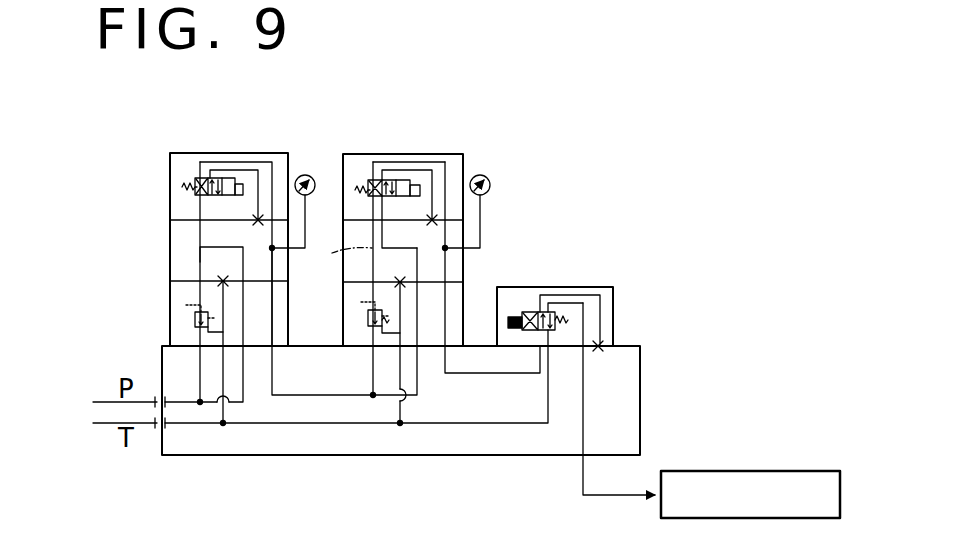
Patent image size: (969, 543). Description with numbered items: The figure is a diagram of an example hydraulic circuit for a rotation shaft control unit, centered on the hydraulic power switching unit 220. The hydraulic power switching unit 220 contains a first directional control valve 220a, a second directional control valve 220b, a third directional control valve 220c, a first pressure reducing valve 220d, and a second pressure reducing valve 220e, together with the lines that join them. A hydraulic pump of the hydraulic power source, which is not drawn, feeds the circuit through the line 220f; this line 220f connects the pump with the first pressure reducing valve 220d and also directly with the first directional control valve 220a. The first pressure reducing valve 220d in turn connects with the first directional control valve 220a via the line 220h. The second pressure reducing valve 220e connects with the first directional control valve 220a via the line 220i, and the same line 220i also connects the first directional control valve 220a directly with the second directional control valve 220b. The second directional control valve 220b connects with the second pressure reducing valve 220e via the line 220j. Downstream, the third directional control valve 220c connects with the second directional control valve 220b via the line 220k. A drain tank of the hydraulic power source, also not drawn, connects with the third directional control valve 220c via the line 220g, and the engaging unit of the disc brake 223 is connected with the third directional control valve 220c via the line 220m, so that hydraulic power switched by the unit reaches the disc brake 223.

The hydraulic power switching unit 220 is at (488, 72).
The first directional control valve 220a is at (222, 150).
The second directional control valve 220b is at (411, 150).
The third directional control valve 220c is at (531, 306).
The first pressure reducing valve 220d is at (190, 329).
The second pressure reducing valve 220e is at (364, 329).
The line 220f is at (222, 245).
The line 220g is at (408, 396).
The line 220h is at (199, 257).
The line 220i is at (273, 172).
The line 220j is at (392, 248).
The line 220k is at (447, 177).
The line 220m is at (585, 387).
The disc brake 223 is at (791, 458).